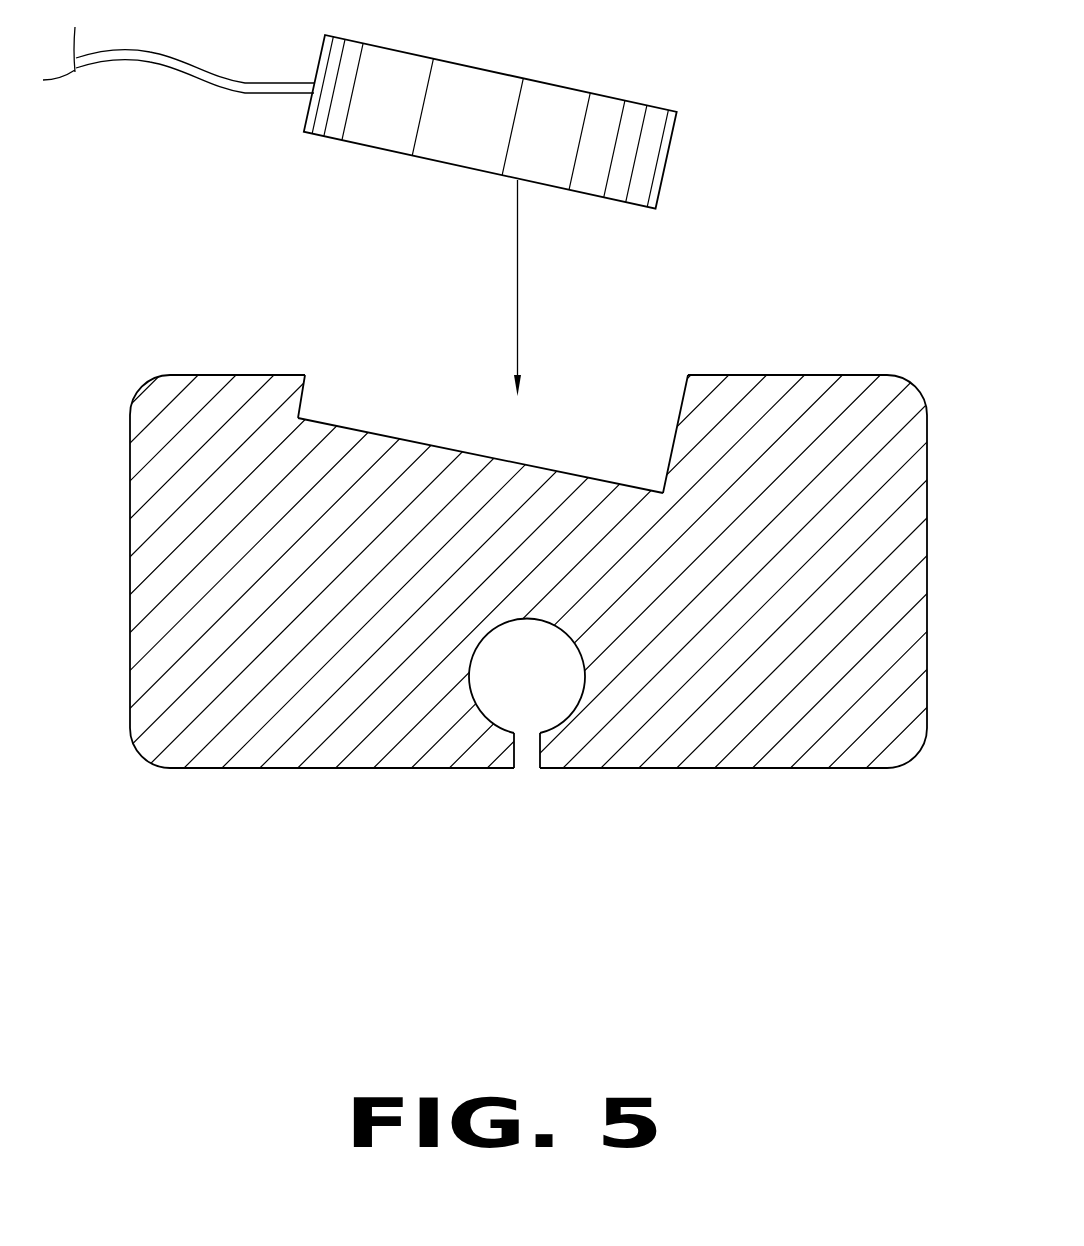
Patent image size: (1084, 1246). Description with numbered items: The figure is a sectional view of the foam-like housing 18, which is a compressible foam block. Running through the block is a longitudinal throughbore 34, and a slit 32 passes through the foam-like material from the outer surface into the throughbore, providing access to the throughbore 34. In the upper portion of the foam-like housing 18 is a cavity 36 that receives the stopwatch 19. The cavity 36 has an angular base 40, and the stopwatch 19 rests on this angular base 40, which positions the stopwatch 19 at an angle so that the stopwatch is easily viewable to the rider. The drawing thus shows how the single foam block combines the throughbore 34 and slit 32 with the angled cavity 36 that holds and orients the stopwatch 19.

The foam-like housing 18 is at (690, 718).
The stopwatch 19 is at (637, 157).
The slit 32 is at (533, 792).
The longitudinal throughbore 34 is at (507, 695).
The cavity 36 is at (607, 410).
The angular base 40 is at (425, 440).